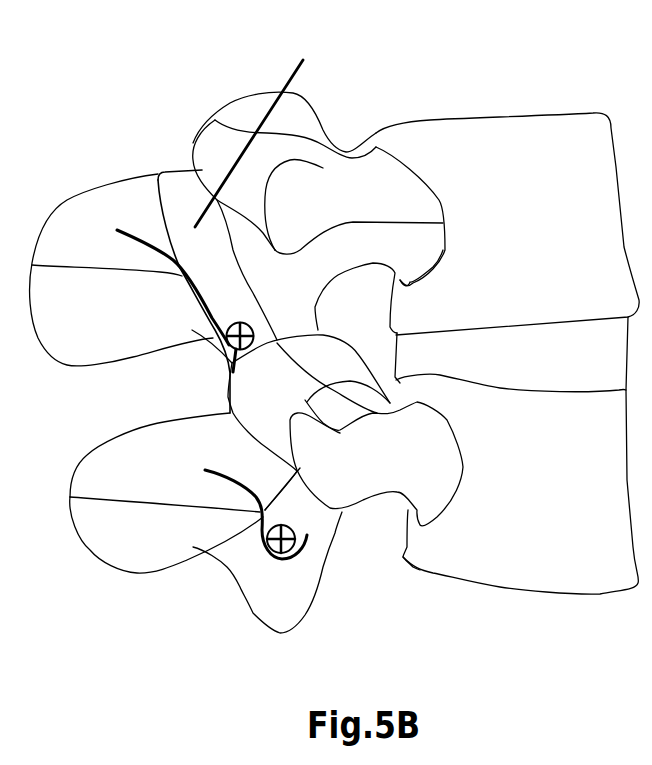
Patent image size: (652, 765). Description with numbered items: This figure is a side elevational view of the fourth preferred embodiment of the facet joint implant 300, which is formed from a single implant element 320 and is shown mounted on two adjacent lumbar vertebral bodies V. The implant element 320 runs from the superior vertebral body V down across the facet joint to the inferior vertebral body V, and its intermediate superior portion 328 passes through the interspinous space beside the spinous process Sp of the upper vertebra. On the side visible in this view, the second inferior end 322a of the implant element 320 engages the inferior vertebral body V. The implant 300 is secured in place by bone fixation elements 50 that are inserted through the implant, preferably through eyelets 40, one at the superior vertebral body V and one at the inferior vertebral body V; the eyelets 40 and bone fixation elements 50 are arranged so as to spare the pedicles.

The facet joint implant 300 is at (92, 126).
The intermediate superior portion 328 is at (178, 168).
The implant element 320 is at (257, 128).
The eyelet 40 is at (197, 386).
The bone fixation element 50 is at (227, 347).
The second inferior end 322a is at (310, 532).
The vertebral body V is at (478, 172).
The spinous process Sp is at (87, 317).